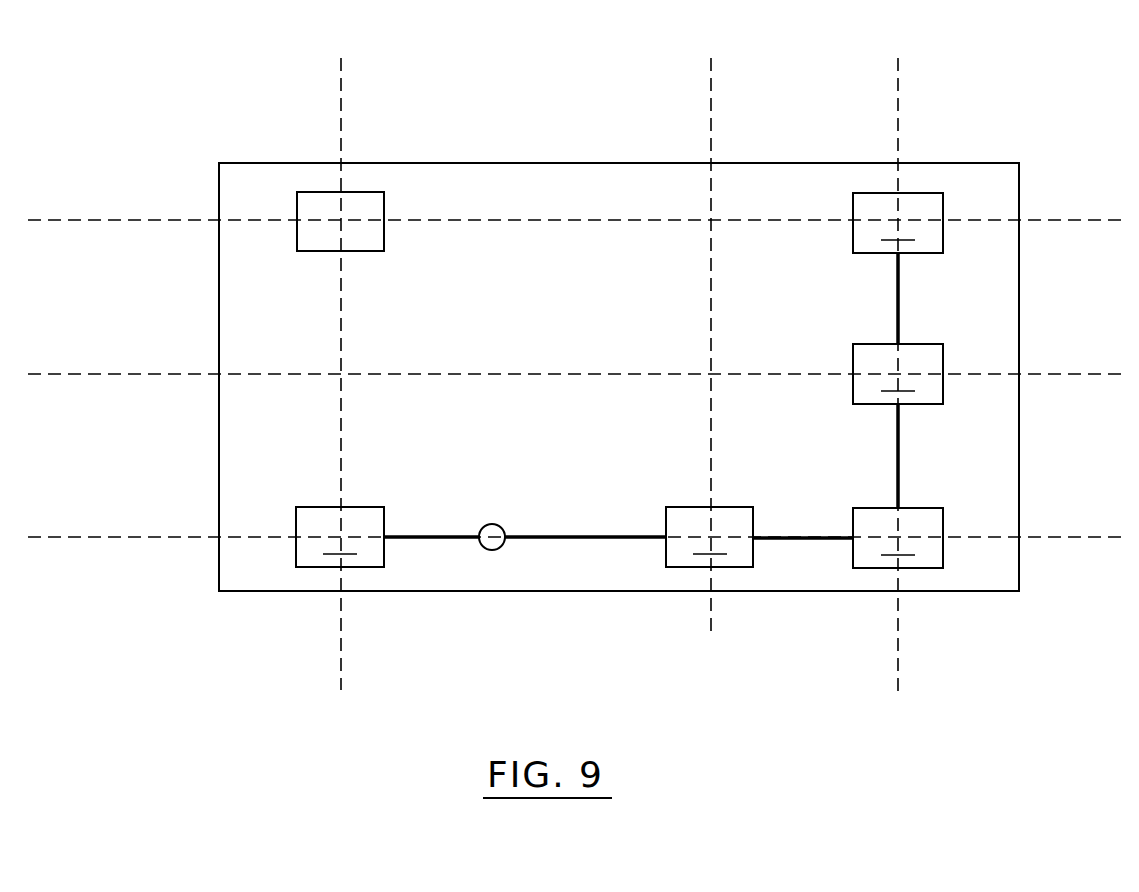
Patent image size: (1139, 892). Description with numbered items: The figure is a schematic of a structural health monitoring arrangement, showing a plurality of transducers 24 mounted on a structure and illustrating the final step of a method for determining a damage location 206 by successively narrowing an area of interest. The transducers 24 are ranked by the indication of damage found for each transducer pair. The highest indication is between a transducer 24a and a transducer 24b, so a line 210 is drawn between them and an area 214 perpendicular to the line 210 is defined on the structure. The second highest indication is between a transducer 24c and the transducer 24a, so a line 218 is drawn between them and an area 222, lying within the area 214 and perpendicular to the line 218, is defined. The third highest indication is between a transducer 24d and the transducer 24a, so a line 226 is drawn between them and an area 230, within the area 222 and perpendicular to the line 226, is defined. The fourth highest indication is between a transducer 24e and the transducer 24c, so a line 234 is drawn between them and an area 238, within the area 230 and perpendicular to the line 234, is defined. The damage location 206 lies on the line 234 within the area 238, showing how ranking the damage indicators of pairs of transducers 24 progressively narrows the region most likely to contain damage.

The transducers 24 is at (357, 238).
The transducer 24a is at (943, 552).
The transducer 24b is at (943, 208).
The transducer 24c is at (296, 550).
The transducer 24d is at (943, 358).
The transducer 24e is at (683, 567).
The damage location 206 is at (502, 526).
The line 210 is at (898, 302).
The area 214 is at (565, 272).
The line 218 is at (808, 538).
The area 222 is at (458, 275).
The line 226 is at (898, 452).
The area 230 is at (381, 438).
The line 234 is at (543, 538).
The area 238 is at (435, 481).